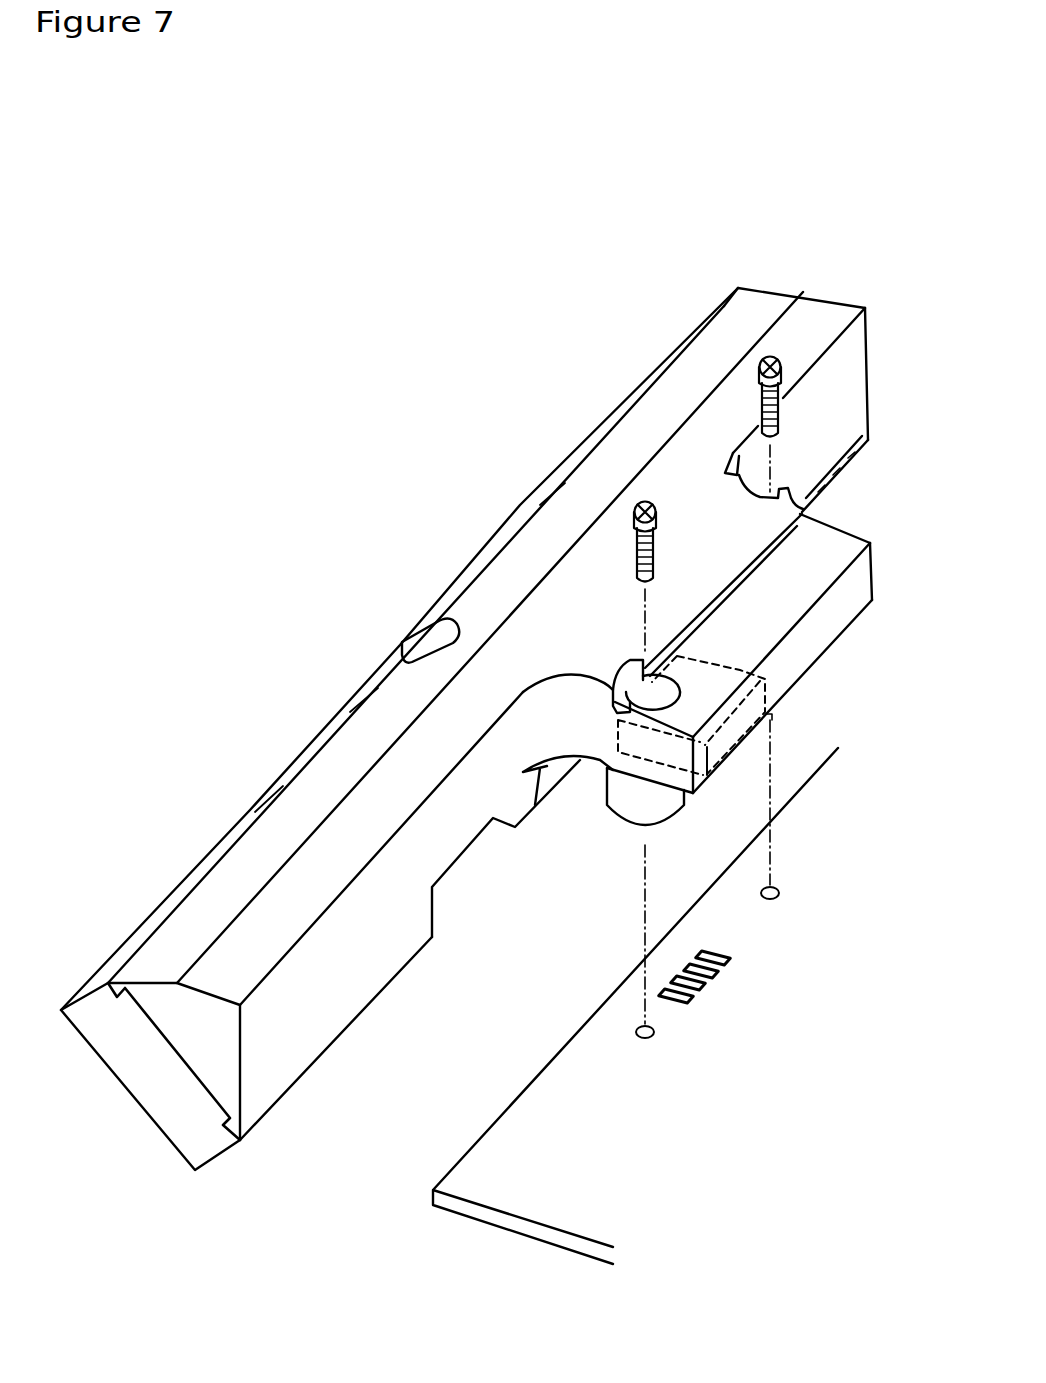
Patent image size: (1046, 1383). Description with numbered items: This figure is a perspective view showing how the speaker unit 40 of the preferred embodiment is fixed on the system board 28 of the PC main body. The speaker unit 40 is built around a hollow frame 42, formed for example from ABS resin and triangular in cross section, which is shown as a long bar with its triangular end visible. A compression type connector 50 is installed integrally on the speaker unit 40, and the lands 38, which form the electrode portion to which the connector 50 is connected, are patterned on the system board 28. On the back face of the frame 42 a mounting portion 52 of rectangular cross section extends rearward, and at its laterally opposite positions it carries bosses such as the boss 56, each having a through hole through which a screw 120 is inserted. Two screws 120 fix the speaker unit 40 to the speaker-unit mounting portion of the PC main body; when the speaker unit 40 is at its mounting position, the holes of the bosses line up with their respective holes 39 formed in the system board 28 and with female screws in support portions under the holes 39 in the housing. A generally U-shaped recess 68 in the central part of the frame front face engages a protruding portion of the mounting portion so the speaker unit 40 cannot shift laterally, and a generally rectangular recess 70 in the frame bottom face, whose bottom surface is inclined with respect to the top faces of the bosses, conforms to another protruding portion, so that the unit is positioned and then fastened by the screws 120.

The system board 28 is at (537, 1205).
The lands 38 is at (725, 957).
The holes 39 is at (779, 893).
The speaker unit 40 is at (274, 750).
The hollow frame 42 is at (208, 1052).
The compression type connector 50 is at (793, 693).
The mounting portion 52 is at (838, 620).
The boss 56 is at (618, 806).
The U-shaped recess 68 is at (402, 652).
The rectangular recess 70 is at (453, 860).
The screws 120 is at (772, 357).